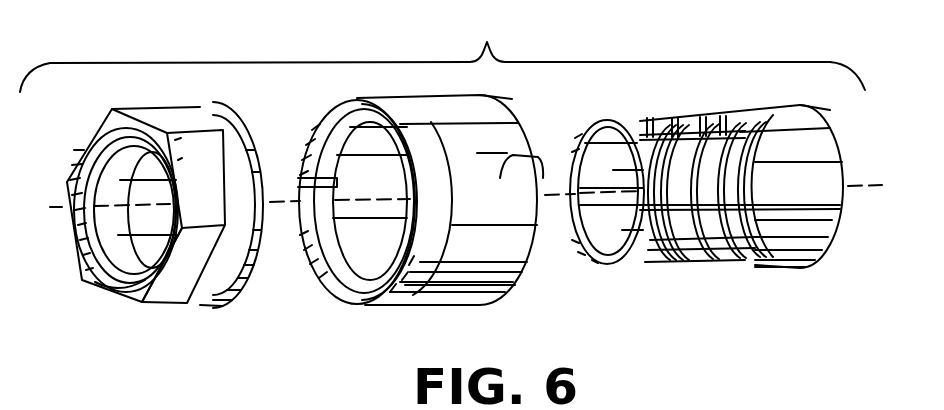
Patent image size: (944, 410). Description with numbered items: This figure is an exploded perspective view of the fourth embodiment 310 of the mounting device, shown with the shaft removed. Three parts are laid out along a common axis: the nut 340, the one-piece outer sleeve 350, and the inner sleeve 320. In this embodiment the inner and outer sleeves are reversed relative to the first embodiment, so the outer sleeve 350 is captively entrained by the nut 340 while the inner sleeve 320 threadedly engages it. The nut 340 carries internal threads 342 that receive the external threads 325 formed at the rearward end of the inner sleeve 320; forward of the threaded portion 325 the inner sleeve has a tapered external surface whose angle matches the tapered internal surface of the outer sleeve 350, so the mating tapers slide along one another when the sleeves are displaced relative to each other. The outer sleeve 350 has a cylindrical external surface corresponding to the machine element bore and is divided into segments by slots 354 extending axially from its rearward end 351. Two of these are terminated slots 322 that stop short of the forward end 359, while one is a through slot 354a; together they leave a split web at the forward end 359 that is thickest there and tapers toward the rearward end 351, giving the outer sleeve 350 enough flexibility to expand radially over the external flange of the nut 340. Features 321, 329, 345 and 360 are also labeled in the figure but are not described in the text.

The fourth embodiment of the mounting device 310 is at (442, 49).
The inner sleeve 320 is at (732, 194).
The front ring of body 321 is at (606, 260).
The terminated slots 322 is at (822, 213).
The external threads 325 is at (668, 263).
The rear end of body 329 is at (823, 116).
The nut 340 is at (165, 215).
The internal threads 342 is at (97, 277).
The hex nut flat face 345 is at (167, 292).
The outer sleeve 350 is at (447, 209).
The rearward end of the outer sleeve 351 is at (336, 288).
The slots 354 is at (457, 302).
The through slot 354a is at (495, 100).
The forward end 359 is at (504, 182).
The collet fingers 360 is at (643, 130).